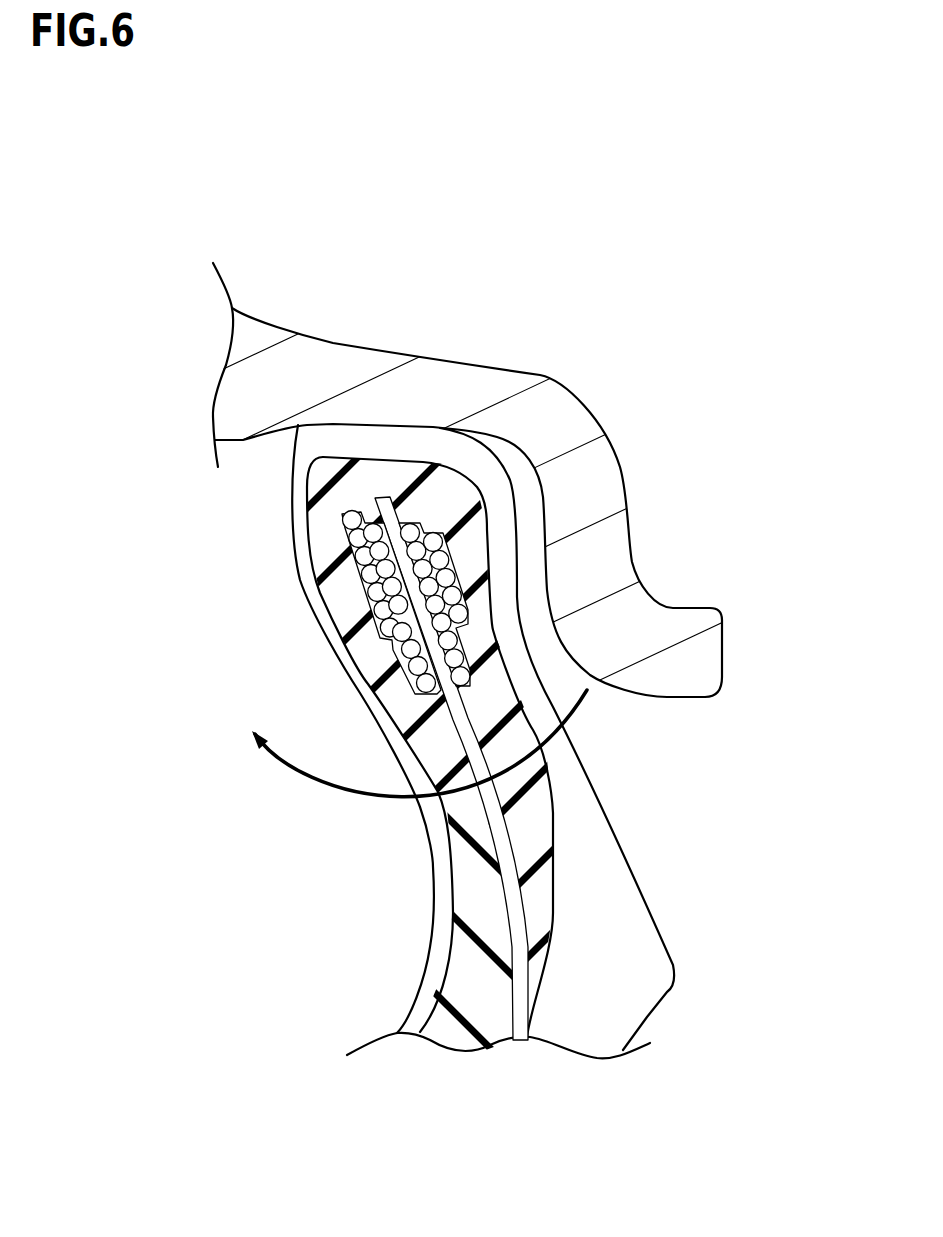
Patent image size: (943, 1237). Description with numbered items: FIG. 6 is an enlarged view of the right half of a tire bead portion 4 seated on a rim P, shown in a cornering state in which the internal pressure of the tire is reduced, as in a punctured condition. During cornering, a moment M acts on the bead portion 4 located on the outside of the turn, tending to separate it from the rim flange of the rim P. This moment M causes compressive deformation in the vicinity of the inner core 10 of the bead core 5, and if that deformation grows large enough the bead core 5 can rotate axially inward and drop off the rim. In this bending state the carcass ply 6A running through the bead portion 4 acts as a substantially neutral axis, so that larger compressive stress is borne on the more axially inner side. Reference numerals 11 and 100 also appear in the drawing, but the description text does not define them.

The bead core 5 is at (435, 600).
The inner core 10 is at (355, 504).
The second cord group 11 is at (428, 528).
The rim P is at (557, 402).
The bead portion 4 is at (520, 583).
The carcass ply 6A is at (510, 888).
The tire structure 100 is at (678, 870).
The moment M is at (419, 757).